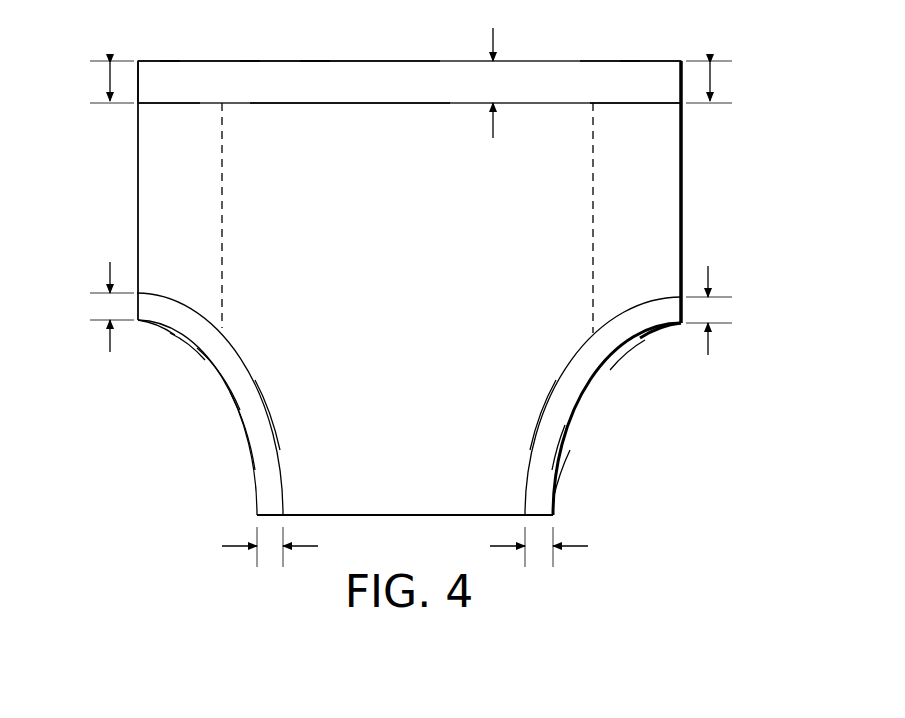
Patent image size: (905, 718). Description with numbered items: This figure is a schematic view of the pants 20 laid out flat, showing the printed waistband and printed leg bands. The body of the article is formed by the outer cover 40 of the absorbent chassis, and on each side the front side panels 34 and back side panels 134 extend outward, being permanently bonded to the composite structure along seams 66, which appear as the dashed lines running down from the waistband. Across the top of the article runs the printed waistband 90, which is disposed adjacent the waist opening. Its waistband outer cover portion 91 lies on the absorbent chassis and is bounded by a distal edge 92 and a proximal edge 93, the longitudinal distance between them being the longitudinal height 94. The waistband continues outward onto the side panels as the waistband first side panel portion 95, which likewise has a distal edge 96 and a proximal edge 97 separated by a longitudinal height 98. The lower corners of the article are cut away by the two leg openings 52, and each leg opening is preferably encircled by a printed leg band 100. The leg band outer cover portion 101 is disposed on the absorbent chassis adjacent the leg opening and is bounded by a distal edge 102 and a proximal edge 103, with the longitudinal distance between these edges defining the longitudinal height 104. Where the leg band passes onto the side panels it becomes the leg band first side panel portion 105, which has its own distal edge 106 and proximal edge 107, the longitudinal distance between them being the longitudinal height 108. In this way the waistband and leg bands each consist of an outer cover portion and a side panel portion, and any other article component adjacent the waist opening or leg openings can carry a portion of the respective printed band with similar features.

The pants 20 is at (436, 301).
The front side panels 34 is at (150, 199).
The back side panels 134 is at (409, 192).
The outer cover 40 is at (421, 320).
The leg openings 52 is at (412, 403).
The seams 66 is at (222, 200).
The printed waistband 90 is at (420, 61).
The waistband outer cover portion 91 is at (362, 61).
The distal edge of waistband outer cover portion 92 is at (288, 61).
The proximal edge of waistband outer cover portion 93 is at (312, 103).
The longitudinal height of waistband outer cover portion 94 is at (496, 36).
The waistband first side panel portion 95 is at (210, 61).
The distal edge of waistband first side panel portion 96 is at (152, 61).
The proximal edge of waistband first side panel portion 97 is at (155, 103).
The longitudinal height of waistband first side panel portion 98 is at (106, 82).
The printed leg band 100 is at (254, 474).
The leg band outer cover portion 101 is at (247, 430).
The distal edge of leg band outer cover portion 102 is at (223, 378).
The proximal edge of leg band outer cover portion 103 is at (268, 406).
The longitudinal height of leg band outer cover portion 104 is at (232, 546).
The leg band first side panel portion 105 is at (152, 324).
The distal edge of leg band first side panel portion 106 is at (193, 346).
The proximal edge of leg band first side panel portion 107 is at (150, 293).
The longitudinal height of leg band first side panel portion 108 is at (411, 295).